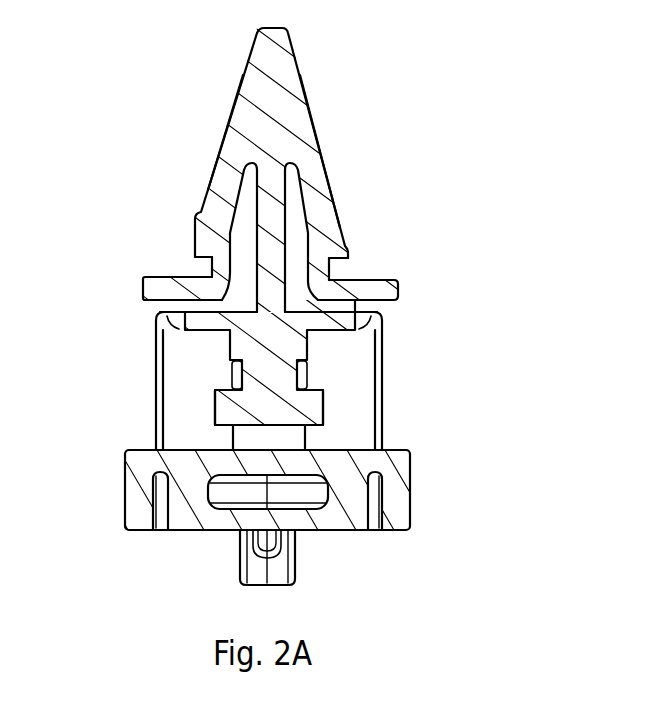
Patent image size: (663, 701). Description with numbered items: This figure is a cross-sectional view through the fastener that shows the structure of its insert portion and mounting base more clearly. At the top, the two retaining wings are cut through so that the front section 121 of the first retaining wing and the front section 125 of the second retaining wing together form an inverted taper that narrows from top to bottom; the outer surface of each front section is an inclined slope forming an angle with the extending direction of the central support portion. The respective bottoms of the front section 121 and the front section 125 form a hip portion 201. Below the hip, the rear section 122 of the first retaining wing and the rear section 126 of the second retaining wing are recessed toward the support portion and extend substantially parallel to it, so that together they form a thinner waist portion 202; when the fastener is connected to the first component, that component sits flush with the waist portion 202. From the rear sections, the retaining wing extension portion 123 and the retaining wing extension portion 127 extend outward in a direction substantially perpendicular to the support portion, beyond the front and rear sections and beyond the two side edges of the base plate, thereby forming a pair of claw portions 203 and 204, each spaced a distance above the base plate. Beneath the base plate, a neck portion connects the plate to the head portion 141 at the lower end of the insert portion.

The front section 121 is at (220, 160).
The rear section 122 is at (195, 263).
The retaining wing extension portion 123 is at (143, 283).
The front section 125 is at (313, 150).
The rear section 126 is at (333, 268).
The retaining wing extension portion 127 is at (397, 294).
The head portion 141 is at (323, 410).
The hip portion 201 is at (203, 212).
The waist portion 202 is at (205, 268).
The claw portion 203 is at (178, 284).
The claw portion 204 is at (397, 300).